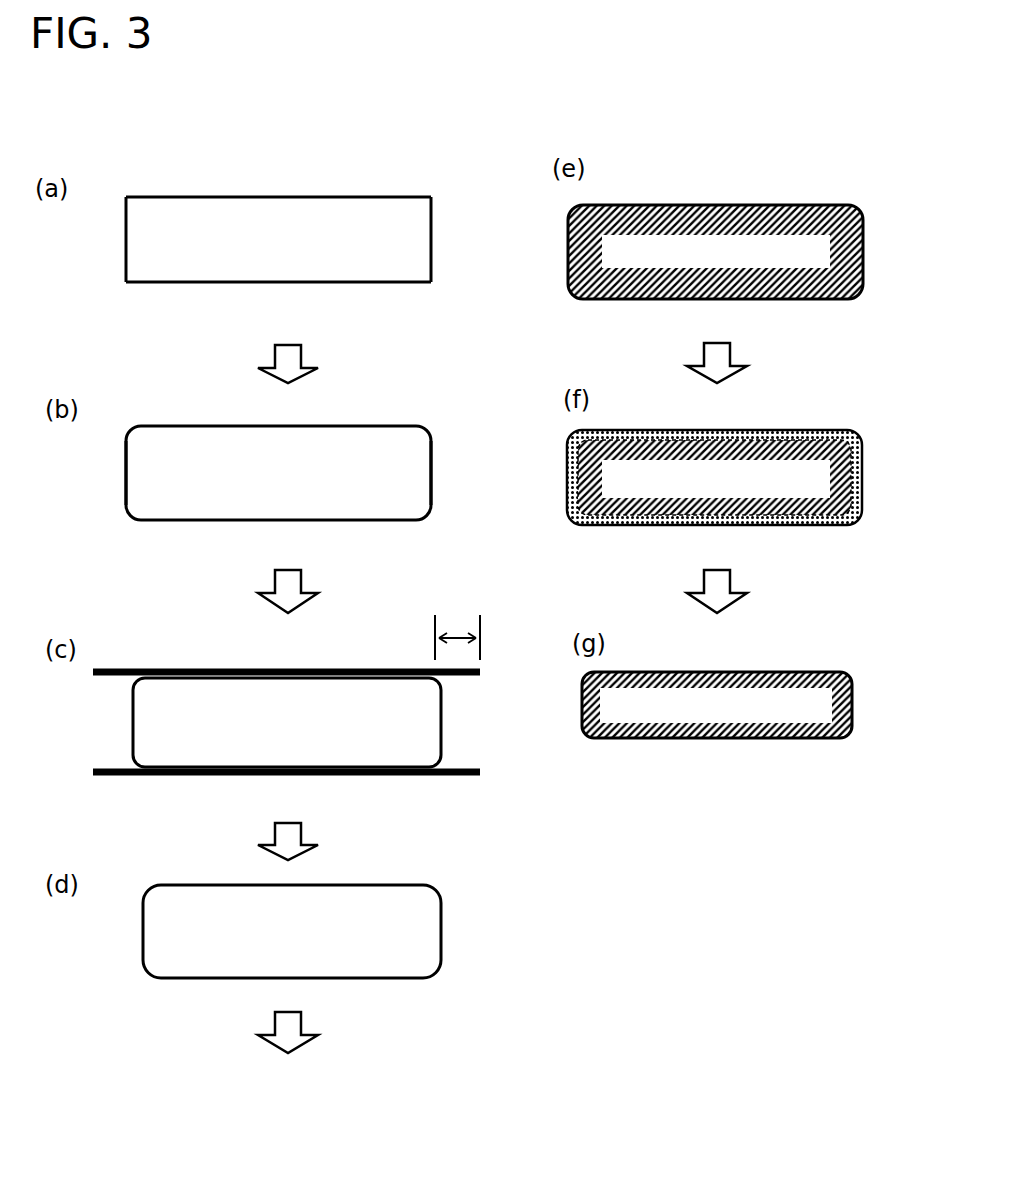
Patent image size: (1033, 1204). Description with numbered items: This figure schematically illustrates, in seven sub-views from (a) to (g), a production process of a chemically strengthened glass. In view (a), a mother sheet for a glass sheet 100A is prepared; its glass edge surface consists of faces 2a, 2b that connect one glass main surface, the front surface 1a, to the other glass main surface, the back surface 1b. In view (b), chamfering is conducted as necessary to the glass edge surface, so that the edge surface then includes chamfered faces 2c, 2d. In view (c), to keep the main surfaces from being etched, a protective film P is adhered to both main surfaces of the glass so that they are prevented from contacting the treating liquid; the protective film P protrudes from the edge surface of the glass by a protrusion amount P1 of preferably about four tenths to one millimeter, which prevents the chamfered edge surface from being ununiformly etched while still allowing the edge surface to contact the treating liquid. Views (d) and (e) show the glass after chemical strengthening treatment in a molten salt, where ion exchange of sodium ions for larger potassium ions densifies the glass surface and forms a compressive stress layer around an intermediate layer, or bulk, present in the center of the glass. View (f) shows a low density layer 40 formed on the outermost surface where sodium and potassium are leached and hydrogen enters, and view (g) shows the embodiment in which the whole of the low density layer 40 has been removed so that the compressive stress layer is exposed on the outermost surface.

The laminate (laminated body) 100A is at (330, 187).
The glass main surface (front surface) 1a is at (190, 197).
The glass main surface (back surface) 1b is at (200, 282).
The glass edge surface face 2a is at (126, 227).
The glass edge surface face 2b is at (432, 265).
The chamfered face 2c is at (126, 431).
The chamfered face 2d is at (431, 431).
The protective film P is at (128, 668).
The protrusion amount P1 is at (457, 628).
The low density layer 40 is at (807, 430).